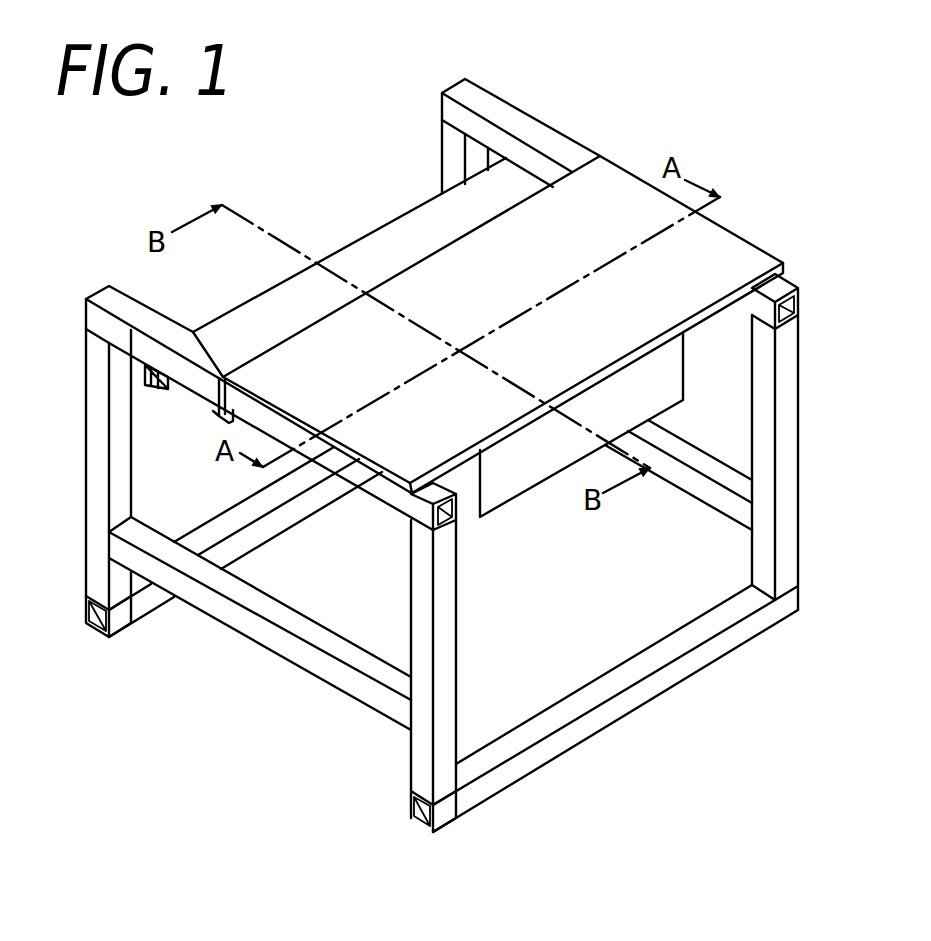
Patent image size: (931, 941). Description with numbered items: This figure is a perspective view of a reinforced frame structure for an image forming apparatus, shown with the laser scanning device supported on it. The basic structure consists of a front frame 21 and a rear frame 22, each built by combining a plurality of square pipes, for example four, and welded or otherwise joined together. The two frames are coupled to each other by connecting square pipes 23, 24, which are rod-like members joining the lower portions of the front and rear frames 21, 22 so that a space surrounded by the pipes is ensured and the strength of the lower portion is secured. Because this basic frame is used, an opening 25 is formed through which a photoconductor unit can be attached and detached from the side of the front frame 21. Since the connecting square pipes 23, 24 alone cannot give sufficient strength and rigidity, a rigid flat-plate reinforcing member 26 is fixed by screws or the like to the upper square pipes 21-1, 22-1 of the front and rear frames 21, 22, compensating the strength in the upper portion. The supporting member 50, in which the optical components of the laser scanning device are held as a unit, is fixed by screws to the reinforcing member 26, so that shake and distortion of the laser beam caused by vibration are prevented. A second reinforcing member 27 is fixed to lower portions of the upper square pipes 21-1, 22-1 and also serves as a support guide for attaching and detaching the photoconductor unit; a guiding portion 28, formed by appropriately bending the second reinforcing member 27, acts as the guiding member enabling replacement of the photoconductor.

The front frame 21 is at (89, 345).
The upper square pipe of front frame 21-1 is at (147, 313).
The rear frame 22 is at (446, 160).
The upper square pipe of rear frame 22-1 is at (562, 157).
The connecting square pipe 23 is at (291, 523).
The connecting square pipe 24 is at (662, 686).
The opening 25 is at (150, 465).
The reinforcing member 26 is at (733, 250).
The second reinforcing member 27 is at (378, 238).
The guiding portion 28 is at (163, 392).
The supporting member 50 is at (537, 490).